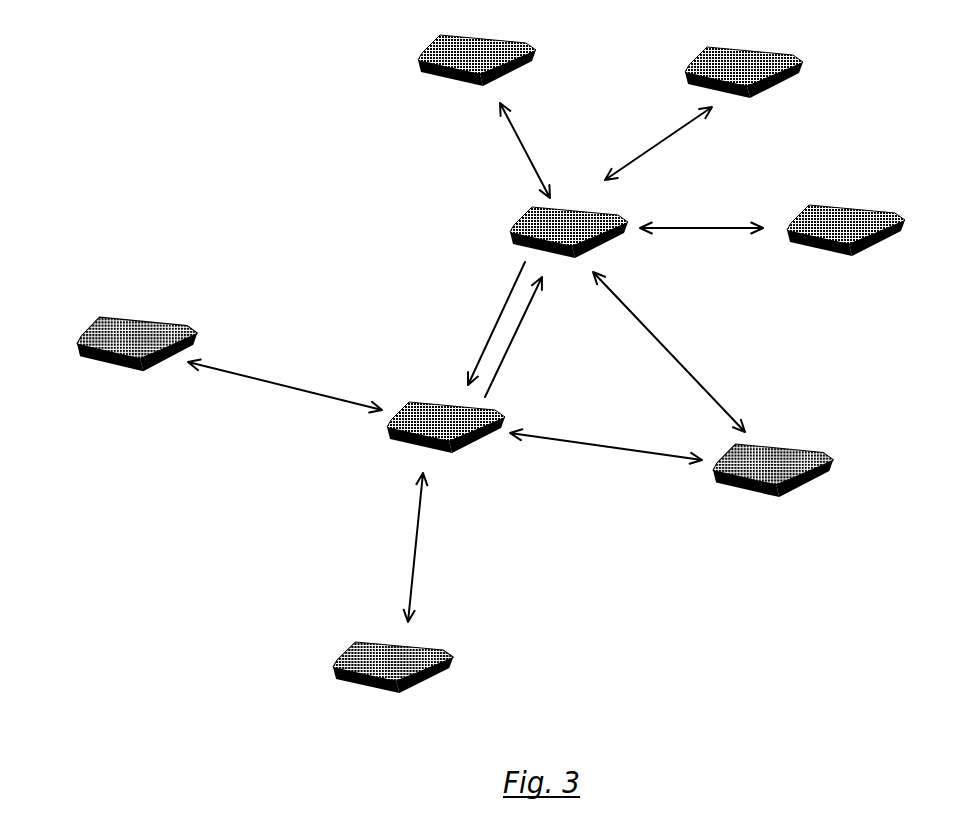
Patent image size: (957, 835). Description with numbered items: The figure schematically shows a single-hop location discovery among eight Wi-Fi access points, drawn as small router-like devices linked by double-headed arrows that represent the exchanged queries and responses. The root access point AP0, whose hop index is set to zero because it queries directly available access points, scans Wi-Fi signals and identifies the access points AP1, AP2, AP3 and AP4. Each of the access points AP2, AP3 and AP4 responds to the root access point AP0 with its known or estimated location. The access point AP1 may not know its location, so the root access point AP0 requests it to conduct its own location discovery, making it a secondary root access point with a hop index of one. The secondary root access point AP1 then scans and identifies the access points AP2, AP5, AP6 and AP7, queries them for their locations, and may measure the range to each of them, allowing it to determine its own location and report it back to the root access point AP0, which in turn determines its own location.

The root access point AP0 is at (453, 461).
The secondary root access point AP1 is at (529, 231).
The access point AP2 is at (773, 491).
The access point AP3 is at (393, 687).
The access point AP4 is at (137, 365).
The access point AP5 is at (859, 240).
The access point AP6 is at (760, 81).
The access point AP7 is at (477, 77).